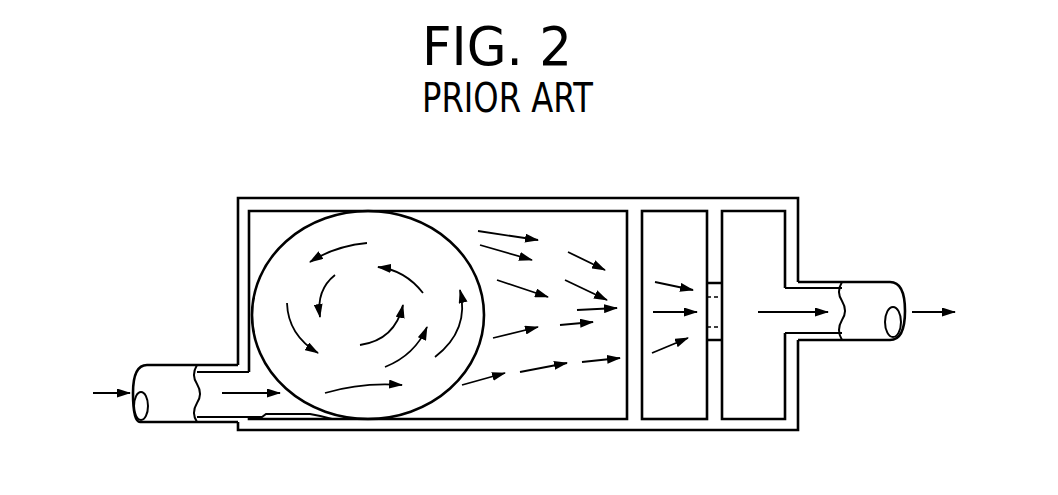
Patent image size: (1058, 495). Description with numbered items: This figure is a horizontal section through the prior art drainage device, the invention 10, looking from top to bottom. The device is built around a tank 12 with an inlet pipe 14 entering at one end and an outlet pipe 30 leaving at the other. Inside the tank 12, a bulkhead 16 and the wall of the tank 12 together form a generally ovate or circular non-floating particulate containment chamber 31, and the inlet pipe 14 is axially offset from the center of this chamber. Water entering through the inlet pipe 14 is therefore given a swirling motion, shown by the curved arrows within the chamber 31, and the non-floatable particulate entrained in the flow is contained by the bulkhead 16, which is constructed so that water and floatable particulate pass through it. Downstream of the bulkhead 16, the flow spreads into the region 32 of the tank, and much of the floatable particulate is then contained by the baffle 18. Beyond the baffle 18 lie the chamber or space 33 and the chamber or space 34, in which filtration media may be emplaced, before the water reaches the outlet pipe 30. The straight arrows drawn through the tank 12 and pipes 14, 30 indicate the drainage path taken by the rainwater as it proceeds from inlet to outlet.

The invention 10 is at (250, 158).
The tank 12 is at (318, 198).
The inlet pipe 14 is at (178, 365).
The bulkhead 16 is at (435, 228).
The baffle 18 is at (643, 390).
The outlet pipe 30 is at (863, 278).
The non-floating particulate containment chamber 31 is at (368, 321).
The first expansion chamber 32 is at (585, 225).
The chamber or space 33 is at (678, 220).
The chamber or space 34 is at (760, 223).